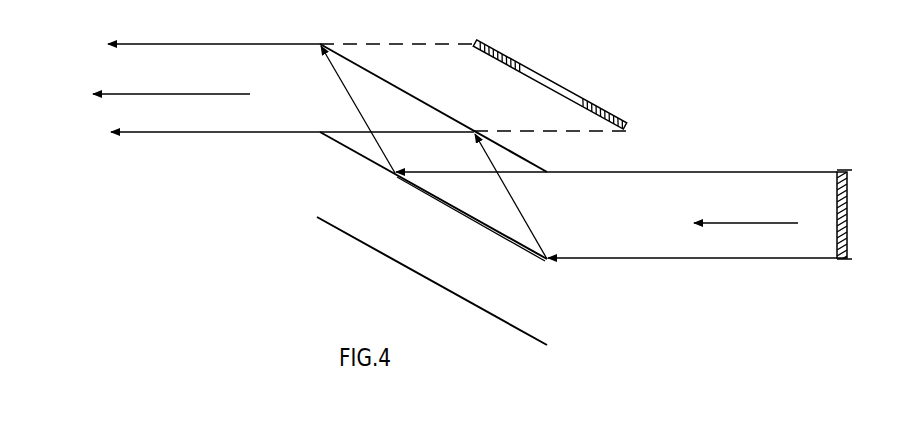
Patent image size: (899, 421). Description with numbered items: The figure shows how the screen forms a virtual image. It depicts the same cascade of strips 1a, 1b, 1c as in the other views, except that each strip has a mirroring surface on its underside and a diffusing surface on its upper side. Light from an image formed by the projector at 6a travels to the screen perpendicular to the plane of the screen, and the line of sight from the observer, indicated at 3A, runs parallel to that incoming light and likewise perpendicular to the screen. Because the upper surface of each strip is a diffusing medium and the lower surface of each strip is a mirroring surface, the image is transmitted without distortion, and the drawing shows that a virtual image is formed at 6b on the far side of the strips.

The strip 1a is at (346, 234).
The strip 1b is at (348, 148).
The strip 1c is at (346, 60).
The image formed by the projector 6a is at (847, 230).
The virtual image 6b is at (484, 42).
The output beam direction 3A is at (126, 104).